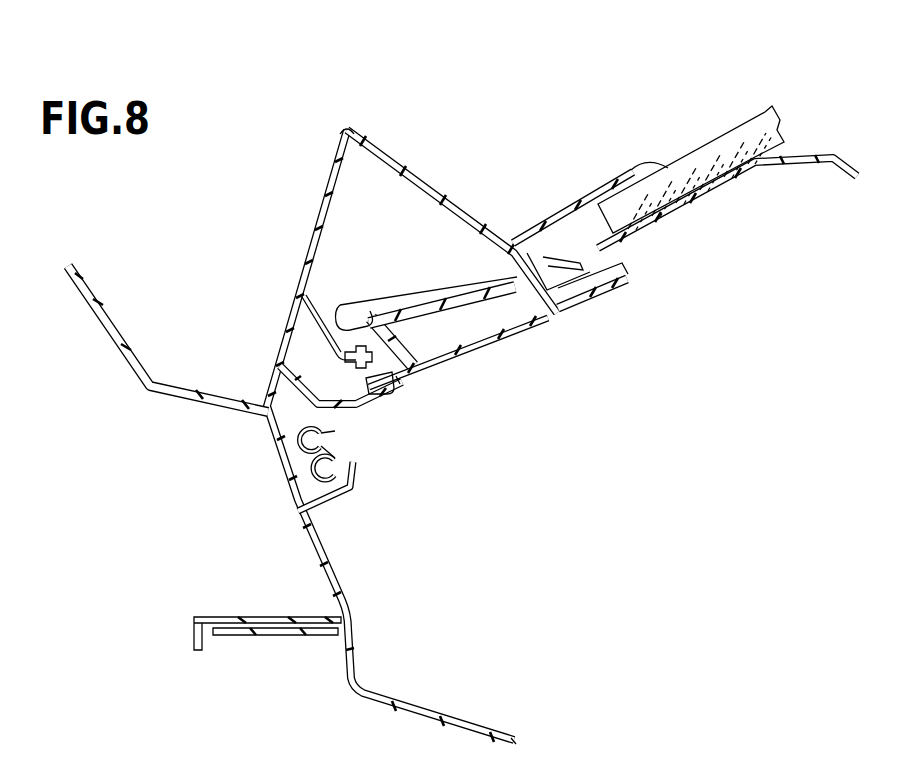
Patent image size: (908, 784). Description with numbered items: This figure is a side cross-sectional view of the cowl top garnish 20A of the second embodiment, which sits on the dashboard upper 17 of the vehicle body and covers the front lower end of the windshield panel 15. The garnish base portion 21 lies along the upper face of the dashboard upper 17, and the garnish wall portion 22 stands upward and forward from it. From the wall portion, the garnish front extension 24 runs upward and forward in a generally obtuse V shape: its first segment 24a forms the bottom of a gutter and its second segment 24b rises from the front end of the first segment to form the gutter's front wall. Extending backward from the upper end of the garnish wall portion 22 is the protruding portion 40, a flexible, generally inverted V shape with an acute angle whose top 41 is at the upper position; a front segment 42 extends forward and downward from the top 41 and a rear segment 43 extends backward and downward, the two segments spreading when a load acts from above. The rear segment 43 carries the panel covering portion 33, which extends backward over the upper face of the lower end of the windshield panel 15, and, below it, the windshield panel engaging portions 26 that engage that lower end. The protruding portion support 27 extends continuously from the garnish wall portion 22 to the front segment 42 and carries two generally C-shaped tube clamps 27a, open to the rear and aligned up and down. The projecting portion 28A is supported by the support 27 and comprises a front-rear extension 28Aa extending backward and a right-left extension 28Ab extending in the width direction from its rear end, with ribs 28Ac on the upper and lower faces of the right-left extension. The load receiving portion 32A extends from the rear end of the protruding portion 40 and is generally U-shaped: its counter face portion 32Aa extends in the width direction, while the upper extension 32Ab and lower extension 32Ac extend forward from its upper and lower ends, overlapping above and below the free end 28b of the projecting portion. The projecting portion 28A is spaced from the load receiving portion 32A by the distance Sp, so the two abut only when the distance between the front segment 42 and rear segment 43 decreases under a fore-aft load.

The windshield panel 15 is at (722, 132).
The dashboard upper 17 is at (413, 713).
The cowl top garnish 20A is at (507, 130).
The garnish base portion 21 is at (241, 620).
The garnish wall portion 22 is at (312, 543).
The garnish front extension 24 is at (125, 476).
The first segment 24a is at (195, 404).
The second segment 24b is at (118, 347).
The windshield panel engaging portions 26 is at (620, 288).
The protruding portion support 27 is at (286, 419).
The tube clamps 27a is at (305, 470).
The projecting portion 28A is at (215, 212).
The front-rear extension 28Aa is at (303, 340).
The right-left extension 28Ab is at (292, 368).
The ribs 28Ac is at (352, 373).
The free end of the projecting portion 28b is at (386, 343).
The load receiving portion 32A is at (498, 306).
The counter face portion 32Aa is at (364, 322).
The upper extension 32Ab is at (340, 308).
The lower extension 32Ac is at (380, 395).
The panel covering portion 33 is at (585, 192).
The protruding portion 40 is at (428, 68).
The top 41 is at (347, 128).
The front segment 42 is at (317, 233).
The rear segment 43 is at (392, 166).
The distance Sp is at (400, 380).